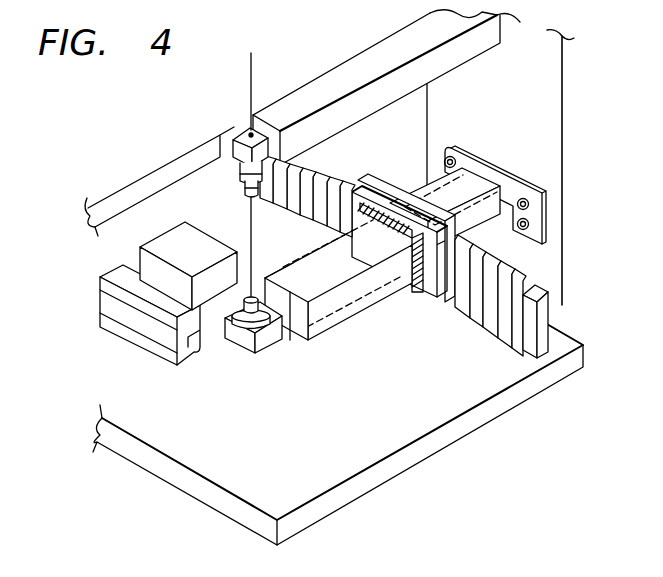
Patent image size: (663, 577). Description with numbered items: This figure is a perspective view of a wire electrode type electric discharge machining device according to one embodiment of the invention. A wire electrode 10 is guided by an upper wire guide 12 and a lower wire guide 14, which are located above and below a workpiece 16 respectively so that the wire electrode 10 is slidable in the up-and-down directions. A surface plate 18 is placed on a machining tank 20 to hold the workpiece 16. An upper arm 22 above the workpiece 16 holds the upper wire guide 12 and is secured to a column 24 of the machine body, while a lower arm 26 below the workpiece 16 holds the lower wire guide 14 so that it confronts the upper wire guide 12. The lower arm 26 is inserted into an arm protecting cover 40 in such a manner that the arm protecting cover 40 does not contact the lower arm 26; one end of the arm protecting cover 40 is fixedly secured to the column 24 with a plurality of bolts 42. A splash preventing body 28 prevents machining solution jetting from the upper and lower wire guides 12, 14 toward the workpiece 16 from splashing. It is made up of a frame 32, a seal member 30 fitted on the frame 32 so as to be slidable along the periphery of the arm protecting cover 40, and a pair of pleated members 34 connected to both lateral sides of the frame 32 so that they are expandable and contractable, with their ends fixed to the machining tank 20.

The wire electrode 10 is at (252, 77).
The upper wire guide 12 is at (237, 128).
The lower wire guide 14 is at (252, 355).
The workpiece 16 is at (147, 196).
The surface plate 18 is at (175, 360).
The machining tank 20 is at (253, 523).
The upper arm 22 is at (343, 71).
The column 24 is at (427, 134).
The lower arm 26 is at (305, 340).
The splash preventing body 28 is at (527, 358).
The seal member 30 is at (408, 297).
The frame 32 is at (433, 298).
The pleated members 34 is at (505, 336).
The arm protecting cover 40 is at (345, 320).
The bolts 42 is at (517, 196).